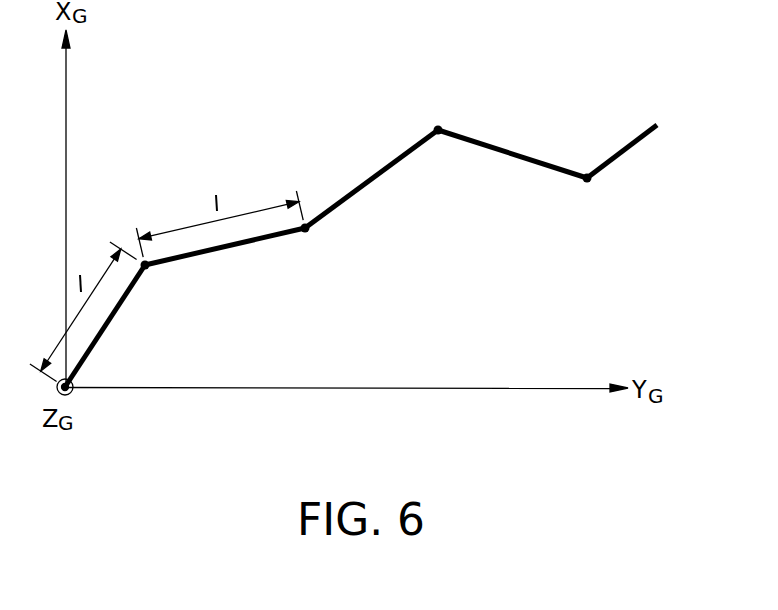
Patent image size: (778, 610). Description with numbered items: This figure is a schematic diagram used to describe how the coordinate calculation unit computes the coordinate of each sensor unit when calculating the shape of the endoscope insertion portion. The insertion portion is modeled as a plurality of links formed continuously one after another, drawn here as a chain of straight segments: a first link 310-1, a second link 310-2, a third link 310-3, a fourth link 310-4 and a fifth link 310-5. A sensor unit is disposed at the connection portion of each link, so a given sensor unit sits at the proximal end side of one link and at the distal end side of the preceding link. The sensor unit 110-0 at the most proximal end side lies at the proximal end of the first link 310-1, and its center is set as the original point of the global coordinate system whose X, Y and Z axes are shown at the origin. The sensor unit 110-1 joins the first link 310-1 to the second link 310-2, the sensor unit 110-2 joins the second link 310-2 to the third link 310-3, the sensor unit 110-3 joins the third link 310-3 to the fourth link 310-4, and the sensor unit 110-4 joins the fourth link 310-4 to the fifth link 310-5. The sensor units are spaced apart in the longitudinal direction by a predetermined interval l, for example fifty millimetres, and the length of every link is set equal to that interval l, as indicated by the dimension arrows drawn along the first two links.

The sensor unit 110-0 is at (74, 392).
The sensor unit 110-1 is at (150, 271).
The sensor unit 110-2 is at (309, 232).
The sensor unit 110-3 is at (438, 126).
The sensor unit 110-4 is at (583, 182).
The link 310-1 is at (112, 325).
The link 310-2 is at (227, 248).
The link 310-3 is at (370, 183).
The link 310-4 is at (497, 153).
The link 310-5 is at (627, 150).